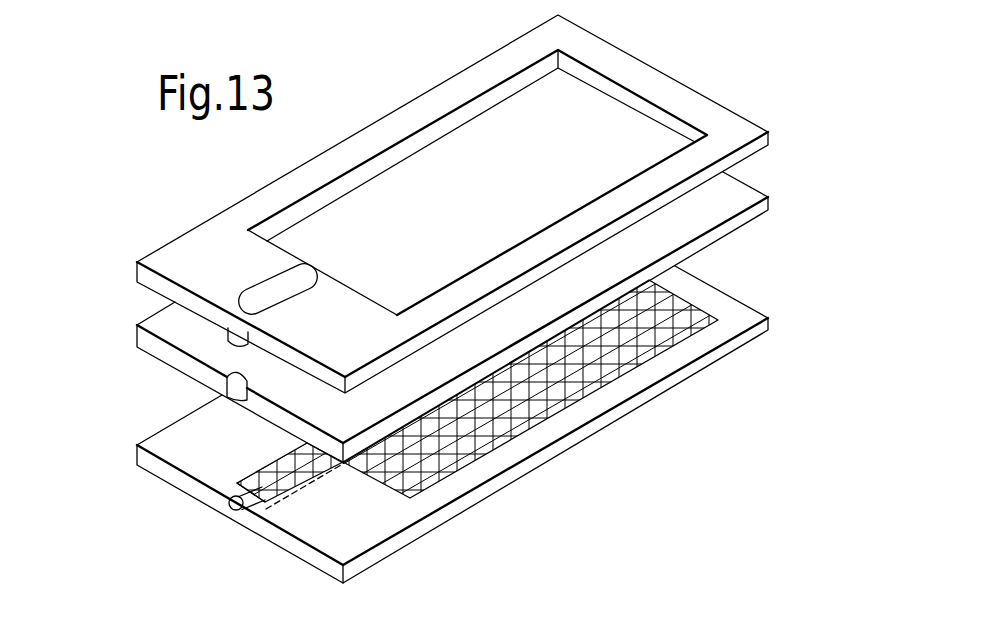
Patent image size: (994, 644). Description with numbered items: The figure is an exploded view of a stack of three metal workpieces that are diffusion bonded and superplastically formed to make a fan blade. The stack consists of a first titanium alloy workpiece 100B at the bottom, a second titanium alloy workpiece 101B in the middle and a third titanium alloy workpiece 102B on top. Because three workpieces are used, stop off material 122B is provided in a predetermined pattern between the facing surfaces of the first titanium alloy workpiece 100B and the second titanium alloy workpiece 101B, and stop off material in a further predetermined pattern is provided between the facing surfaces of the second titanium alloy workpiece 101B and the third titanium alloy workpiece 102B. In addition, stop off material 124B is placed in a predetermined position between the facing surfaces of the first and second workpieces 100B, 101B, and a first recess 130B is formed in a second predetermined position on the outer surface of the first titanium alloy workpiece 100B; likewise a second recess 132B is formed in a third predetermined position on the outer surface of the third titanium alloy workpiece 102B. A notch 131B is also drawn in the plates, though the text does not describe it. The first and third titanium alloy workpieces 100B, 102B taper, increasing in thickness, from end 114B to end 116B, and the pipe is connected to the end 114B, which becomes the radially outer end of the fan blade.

The third titanium alloy workpiece 102B is at (766, 141).
The second titanium alloy workpiece 101B is at (748, 218).
The first titanium alloy workpiece 100B is at (717, 306).
The end 116B is at (761, 330).
The end 114B is at (350, 573).
The stop off material 122B is at (684, 325).
The second recess 132B is at (288, 290).
The notch 131B is at (244, 339).
The stop off material 124B is at (258, 486).
The first recess 130B is at (317, 485).